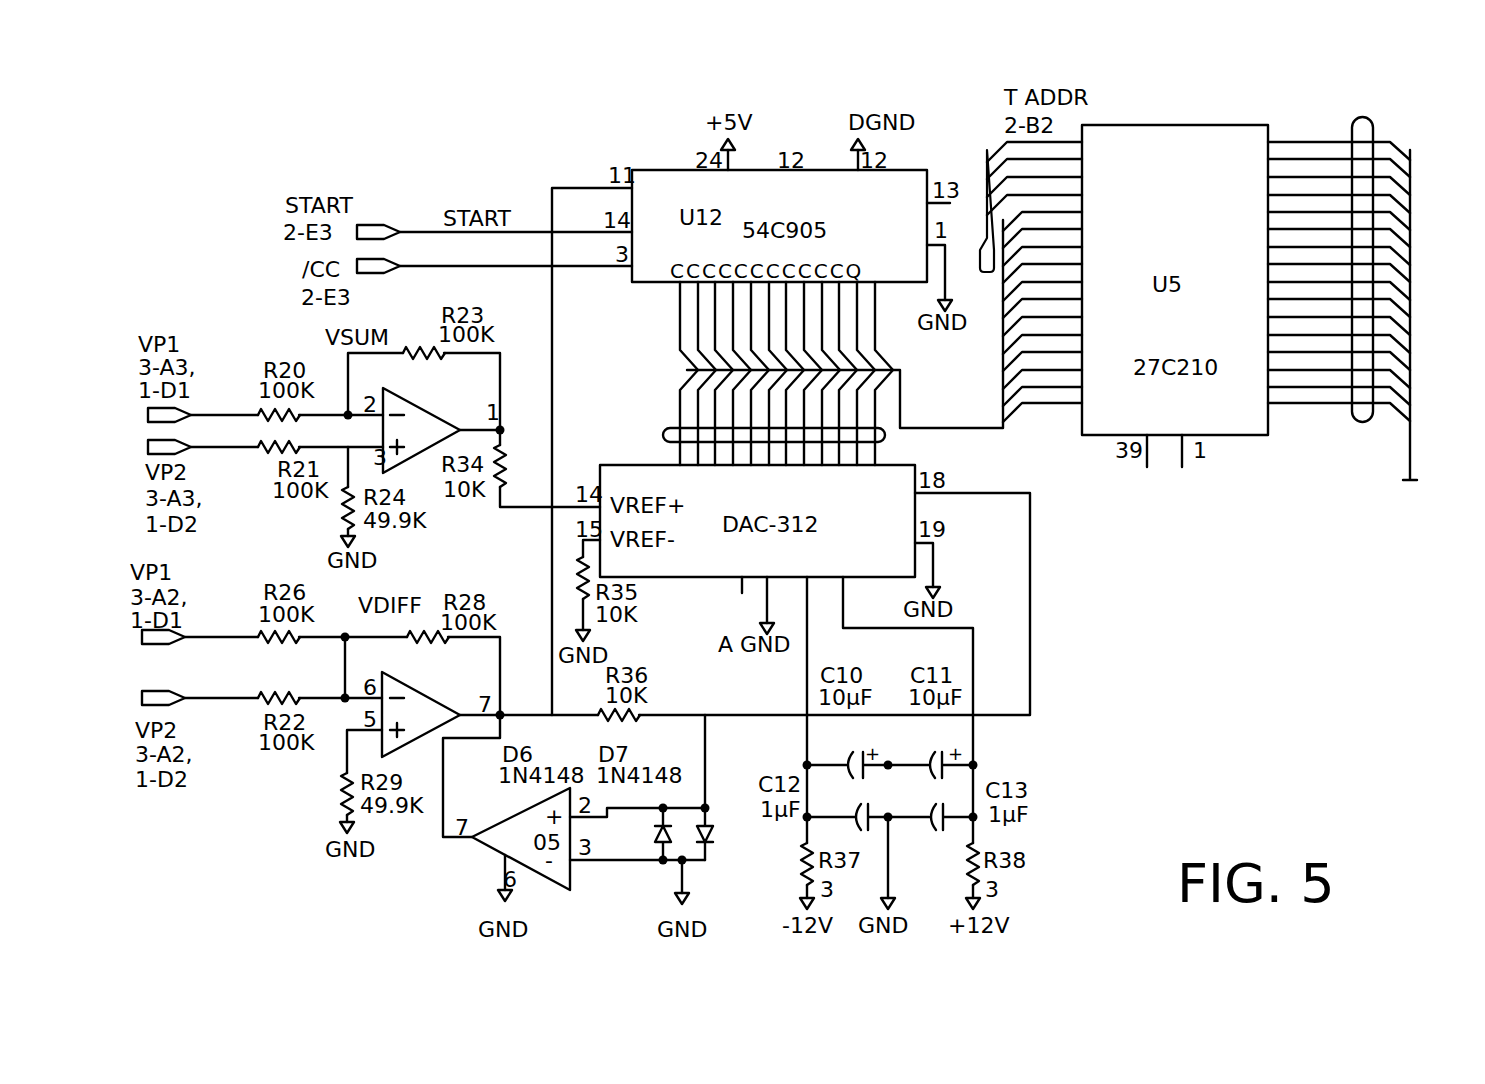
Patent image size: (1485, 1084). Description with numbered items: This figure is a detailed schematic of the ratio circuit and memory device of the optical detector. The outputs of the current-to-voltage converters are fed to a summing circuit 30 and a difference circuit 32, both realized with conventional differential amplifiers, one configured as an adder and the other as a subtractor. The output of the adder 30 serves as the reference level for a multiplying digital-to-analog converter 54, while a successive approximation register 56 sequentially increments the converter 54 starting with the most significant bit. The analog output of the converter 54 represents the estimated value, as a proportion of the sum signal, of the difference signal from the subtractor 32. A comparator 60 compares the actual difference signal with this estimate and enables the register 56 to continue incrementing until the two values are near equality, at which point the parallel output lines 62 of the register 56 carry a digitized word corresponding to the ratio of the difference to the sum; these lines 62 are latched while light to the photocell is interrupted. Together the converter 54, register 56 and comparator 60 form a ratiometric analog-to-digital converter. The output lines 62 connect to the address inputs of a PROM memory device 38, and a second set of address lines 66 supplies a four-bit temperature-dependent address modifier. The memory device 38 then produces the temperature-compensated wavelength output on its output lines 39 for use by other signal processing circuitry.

The summing circuit 30 is at (401, 390).
The difference circuit 32 is at (418, 747).
The memory device 38 is at (1287, 418).
The output lines 39 is at (1382, 122).
The multiplying digital-to-analog converter 54 is at (640, 465).
The successive approximation register 56 is at (651, 283).
The comparator 60 is at (490, 855).
The parallel output lines 62 is at (885, 436).
The address lines 66 is at (985, 167).